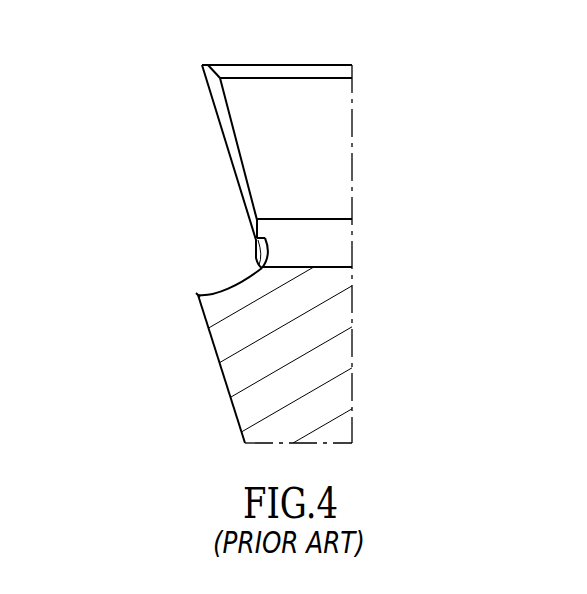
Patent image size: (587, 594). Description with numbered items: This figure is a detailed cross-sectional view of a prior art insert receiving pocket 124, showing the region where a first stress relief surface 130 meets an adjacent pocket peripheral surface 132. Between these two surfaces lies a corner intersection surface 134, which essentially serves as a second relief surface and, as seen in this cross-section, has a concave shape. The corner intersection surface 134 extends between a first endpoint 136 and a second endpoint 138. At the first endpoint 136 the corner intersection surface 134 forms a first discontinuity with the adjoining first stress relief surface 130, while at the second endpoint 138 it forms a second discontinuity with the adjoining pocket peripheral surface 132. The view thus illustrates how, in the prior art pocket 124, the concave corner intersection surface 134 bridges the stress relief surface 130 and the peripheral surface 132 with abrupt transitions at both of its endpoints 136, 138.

The insert receiving pocket 124 is at (302, 196).
The first stress relief surface 130 is at (302, 266).
The pocket peripheral surface 132 is at (212, 343).
The corner intersection surface 134 is at (223, 288).
The first endpoint 136 is at (257, 266).
The second endpoint 138 is at (198, 295).